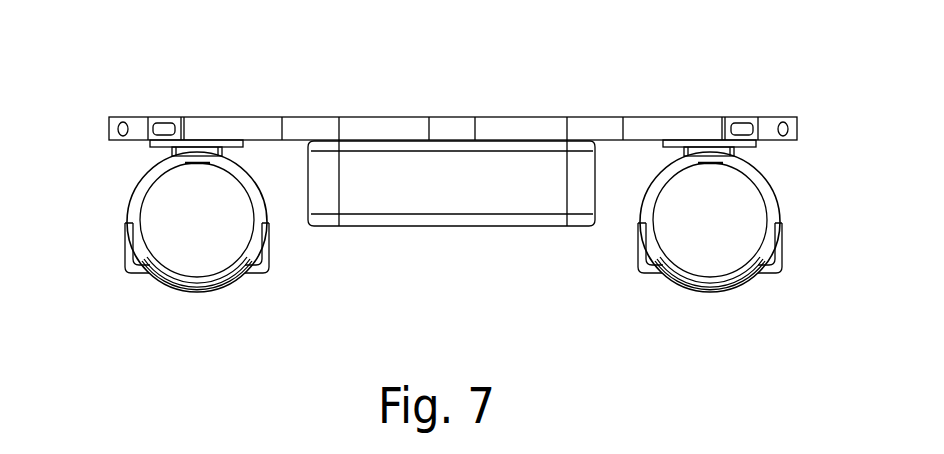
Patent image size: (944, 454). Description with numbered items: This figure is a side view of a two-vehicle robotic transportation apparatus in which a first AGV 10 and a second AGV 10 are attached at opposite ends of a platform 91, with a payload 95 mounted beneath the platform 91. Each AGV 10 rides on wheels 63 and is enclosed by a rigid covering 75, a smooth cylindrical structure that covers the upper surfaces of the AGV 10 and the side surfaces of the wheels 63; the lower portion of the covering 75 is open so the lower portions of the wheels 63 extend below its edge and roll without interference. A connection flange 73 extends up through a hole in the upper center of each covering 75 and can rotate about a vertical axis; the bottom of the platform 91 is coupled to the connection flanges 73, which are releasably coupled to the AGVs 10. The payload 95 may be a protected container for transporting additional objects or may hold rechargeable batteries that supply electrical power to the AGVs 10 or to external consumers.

The AGV 10 is at (125, 226).
The wheels 63 is at (223, 292).
The connection flange 73 is at (240, 146).
The rigid covering 75 is at (268, 222).
The platform 91 is at (408, 128).
The payload 95 is at (432, 226).